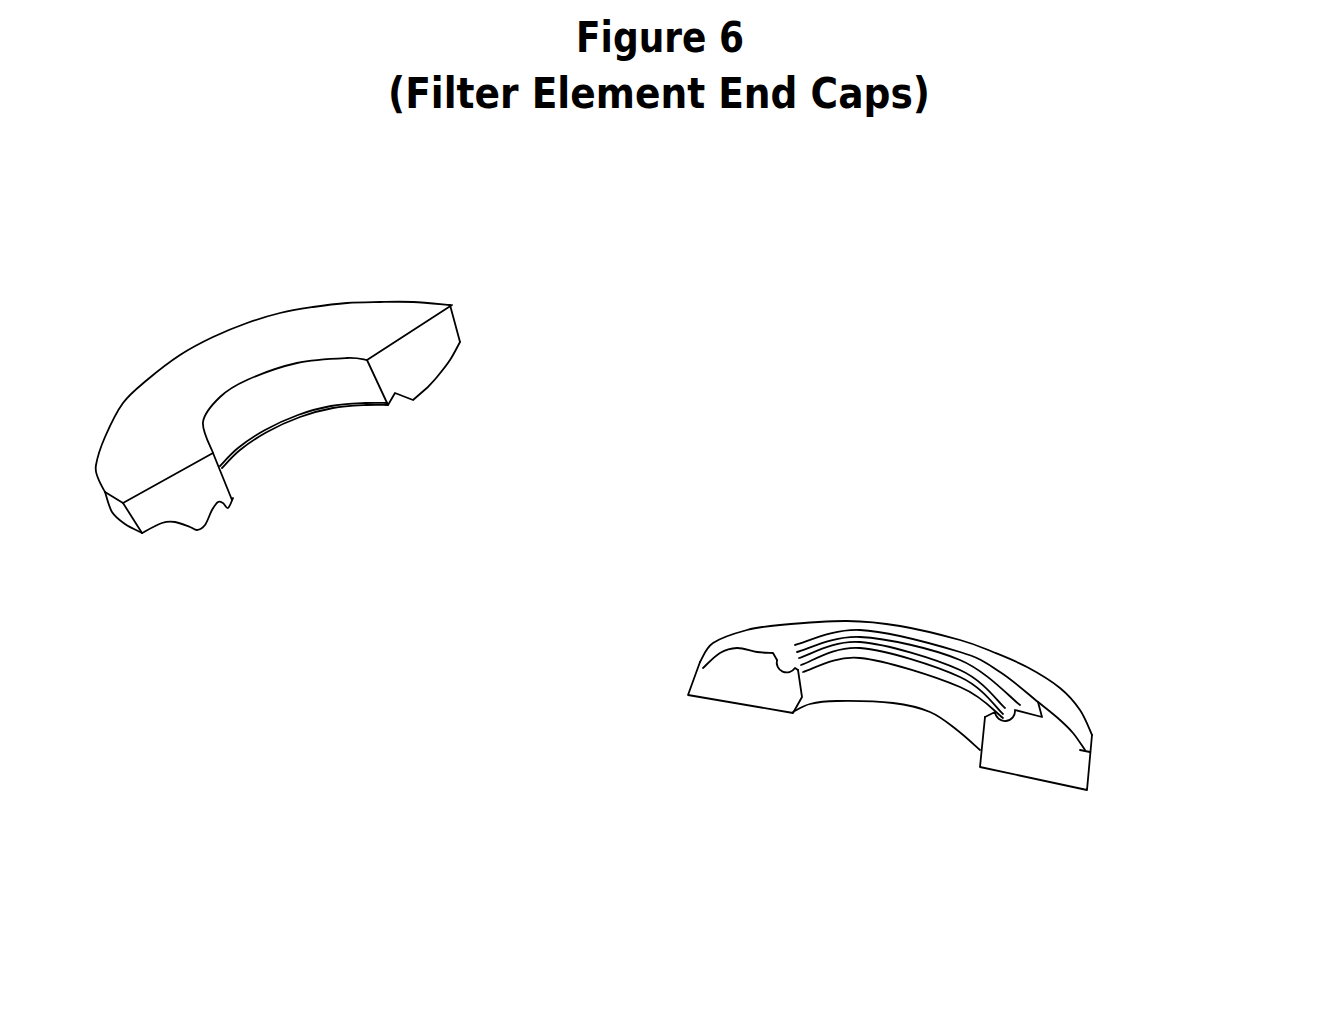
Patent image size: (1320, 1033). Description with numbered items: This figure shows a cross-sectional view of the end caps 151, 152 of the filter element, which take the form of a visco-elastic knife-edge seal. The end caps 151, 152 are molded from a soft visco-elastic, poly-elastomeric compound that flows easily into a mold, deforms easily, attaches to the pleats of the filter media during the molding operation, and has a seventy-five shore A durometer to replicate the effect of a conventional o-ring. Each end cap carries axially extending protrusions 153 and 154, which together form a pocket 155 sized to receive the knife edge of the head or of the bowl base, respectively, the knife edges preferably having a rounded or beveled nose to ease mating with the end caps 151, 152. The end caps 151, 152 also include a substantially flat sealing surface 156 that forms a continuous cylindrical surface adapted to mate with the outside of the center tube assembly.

The end cap 151 is at (458, 343).
The end cap 152 is at (1048, 680).
The axially extending protrusion 153 is at (743, 683).
The axially extending protrusion 154 is at (786, 632).
The pocket 155 is at (433, 396).
The sealing surface 156 is at (281, 435).